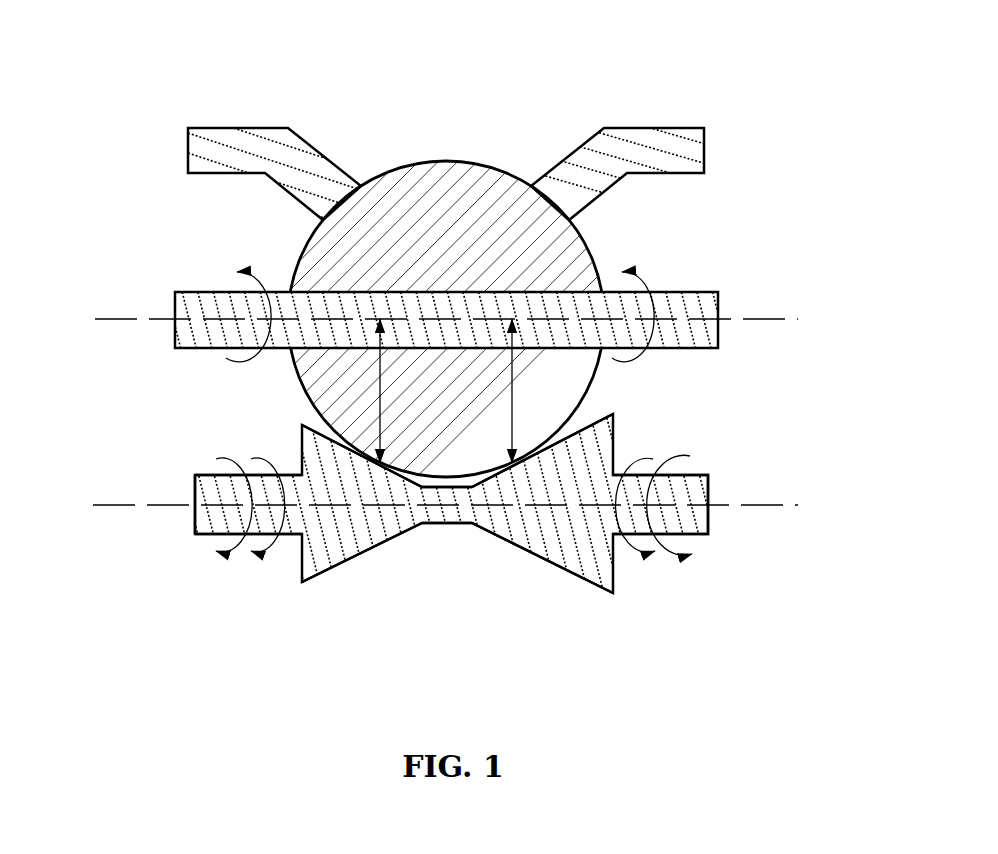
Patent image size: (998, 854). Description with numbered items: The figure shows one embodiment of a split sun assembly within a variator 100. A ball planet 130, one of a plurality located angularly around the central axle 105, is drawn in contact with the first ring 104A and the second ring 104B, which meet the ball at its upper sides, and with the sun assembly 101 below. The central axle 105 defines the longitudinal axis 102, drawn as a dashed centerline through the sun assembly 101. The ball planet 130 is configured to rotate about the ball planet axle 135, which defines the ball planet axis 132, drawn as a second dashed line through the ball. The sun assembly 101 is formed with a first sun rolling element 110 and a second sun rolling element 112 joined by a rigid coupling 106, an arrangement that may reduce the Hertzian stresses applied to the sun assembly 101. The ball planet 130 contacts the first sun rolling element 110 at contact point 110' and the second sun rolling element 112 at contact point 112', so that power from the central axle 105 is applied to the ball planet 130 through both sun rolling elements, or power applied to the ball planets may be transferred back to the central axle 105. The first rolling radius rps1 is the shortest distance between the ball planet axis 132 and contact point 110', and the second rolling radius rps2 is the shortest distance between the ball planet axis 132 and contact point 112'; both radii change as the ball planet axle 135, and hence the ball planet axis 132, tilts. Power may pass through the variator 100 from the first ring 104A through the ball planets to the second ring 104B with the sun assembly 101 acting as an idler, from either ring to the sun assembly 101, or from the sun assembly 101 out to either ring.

The variator 100 is at (866, 128).
The ball planet 130 is at (394, 170).
The first ring 104A is at (188, 147).
The second ring 104B is at (703, 152).
The ball planet axis 132 is at (790, 319).
The ball planet axle 135 is at (690, 292).
The sun assembly 101 is at (293, 610).
The longitudinal axis 102 is at (790, 505).
The central axle 105 is at (195, 488).
The first sun rolling element 110 is at (362, 512).
The second sun rolling element 112 is at (542, 509).
The rigid coupling 106 is at (472, 525).
The contact point 110' is at (298, 440).
The contact point 112' is at (609, 438).
The first rolling radius rps1 is at (380, 380).
The second rolling radius rps2 is at (512, 380).